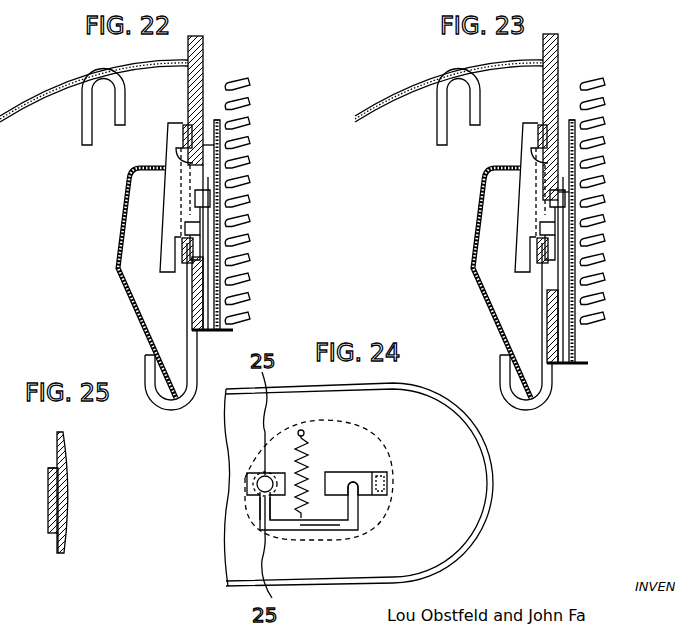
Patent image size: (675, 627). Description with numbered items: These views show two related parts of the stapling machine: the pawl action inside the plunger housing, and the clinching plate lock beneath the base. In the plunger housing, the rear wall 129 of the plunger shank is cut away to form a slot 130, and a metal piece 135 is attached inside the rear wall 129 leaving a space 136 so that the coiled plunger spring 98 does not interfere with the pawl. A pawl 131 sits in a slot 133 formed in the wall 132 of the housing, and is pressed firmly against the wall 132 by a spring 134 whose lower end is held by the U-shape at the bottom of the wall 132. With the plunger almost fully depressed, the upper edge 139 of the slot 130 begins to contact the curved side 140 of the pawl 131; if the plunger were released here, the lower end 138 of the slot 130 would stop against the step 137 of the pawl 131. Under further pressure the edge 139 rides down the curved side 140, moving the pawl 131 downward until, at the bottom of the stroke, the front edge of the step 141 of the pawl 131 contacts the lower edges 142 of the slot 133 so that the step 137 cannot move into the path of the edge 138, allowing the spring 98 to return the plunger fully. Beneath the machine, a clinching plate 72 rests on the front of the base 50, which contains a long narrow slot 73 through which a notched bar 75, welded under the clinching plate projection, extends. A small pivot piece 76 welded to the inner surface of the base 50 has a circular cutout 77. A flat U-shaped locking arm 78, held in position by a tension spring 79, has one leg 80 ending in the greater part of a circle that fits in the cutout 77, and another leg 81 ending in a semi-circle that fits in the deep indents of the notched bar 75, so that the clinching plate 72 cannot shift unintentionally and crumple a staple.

In FIG. 22, the rear wall of the plunger shank 129 is at (205, 44).
In FIG. 23, the rear wall of the plunger shank 129 is at (593, 197).
In FIG. 22, the coiled plunger spring 98 is at (250, 86).
In FIG. 23, the coiled plunger spring 98 is at (606, 198).
In FIG. 22, the wall of the plunger housing 132 is at (185, 108).
In FIG. 23, the wall of the plunger housing 132 is at (492, 240).
In FIG. 22, the curved side of the pawl 140 is at (192, 162).
In FIG. 23, the curved side of the pawl 140 is at (490, 162).
In FIG. 22, the pawl 131 is at (170, 184).
In FIG. 23, the pawl 131 is at (488, 197).
In FIG. 22, the step of the pawl 137 is at (190, 222).
In FIG. 23, the step of the pawl 137 is at (489, 176).
In FIG. 22, the spring 134 is at (128, 223).
In FIG. 23, the spring 134 is at (481, 283).
In FIG. 22, the slot in the housing wall 133 is at (185, 224).
In FIG. 23, the slot in the housing wall 133 is at (591, 180).
In FIG. 22, the step of the pawl 141 is at (183, 240).
In FIG. 23, the step of the pawl 141 is at (493, 252).
In FIG. 22, the lower edges of slot 133 142 is at (187, 253).
In FIG. 23, the lower edges of slot 133 142 is at (591, 300).
In FIG. 22, the slot in the rear wall of the plunger shank 130 is at (208, 233).
In FIG. 23, the slot in the rear wall of the plunger shank 130 is at (600, 270).
In FIG. 22, the space 136 is at (210, 158).
In FIG. 23, the space 136 is at (602, 241).
In FIG. 22, the upper edge of slot 130 139 is at (207, 145).
In FIG. 23, the upper edge of slot 130 139 is at (600, 192).
In FIG. 22, the metal piece 135 is at (216, 177).
In FIG. 23, the metal piece 135 is at (606, 151).
In FIG. 22, the lower end of slot 130 138 is at (205, 262).
In FIG. 23, the lower end of slot 130 138 is at (596, 328).
In FIG. 24, the base 50 is at (447, 540).
In FIG. 25, the base 50 is at (60, 540).
In FIG. 24, the tension spring 79 is at (308, 457).
In FIG. 24, the pivot piece 76 is at (245, 473).
In FIG. 25, the pivot piece 76 is at (53, 473).
In FIG. 24, the circular cutout 77 is at (255, 487).
In FIG. 24, the leg of the locking arm 81 is at (360, 508).
In FIG. 24, the leg of the locking arm 80 is at (260, 508).
In FIG. 25, the leg of the locking arm 80 is at (55, 513).
In FIG. 24, the notched bar 75 is at (352, 478).
In FIG. 24, the slot 73 is at (380, 482).
In FIG. 24, the locking arm 78 is at (330, 523).
In FIG. 25, the clinching plate 72 is at (70, 470).